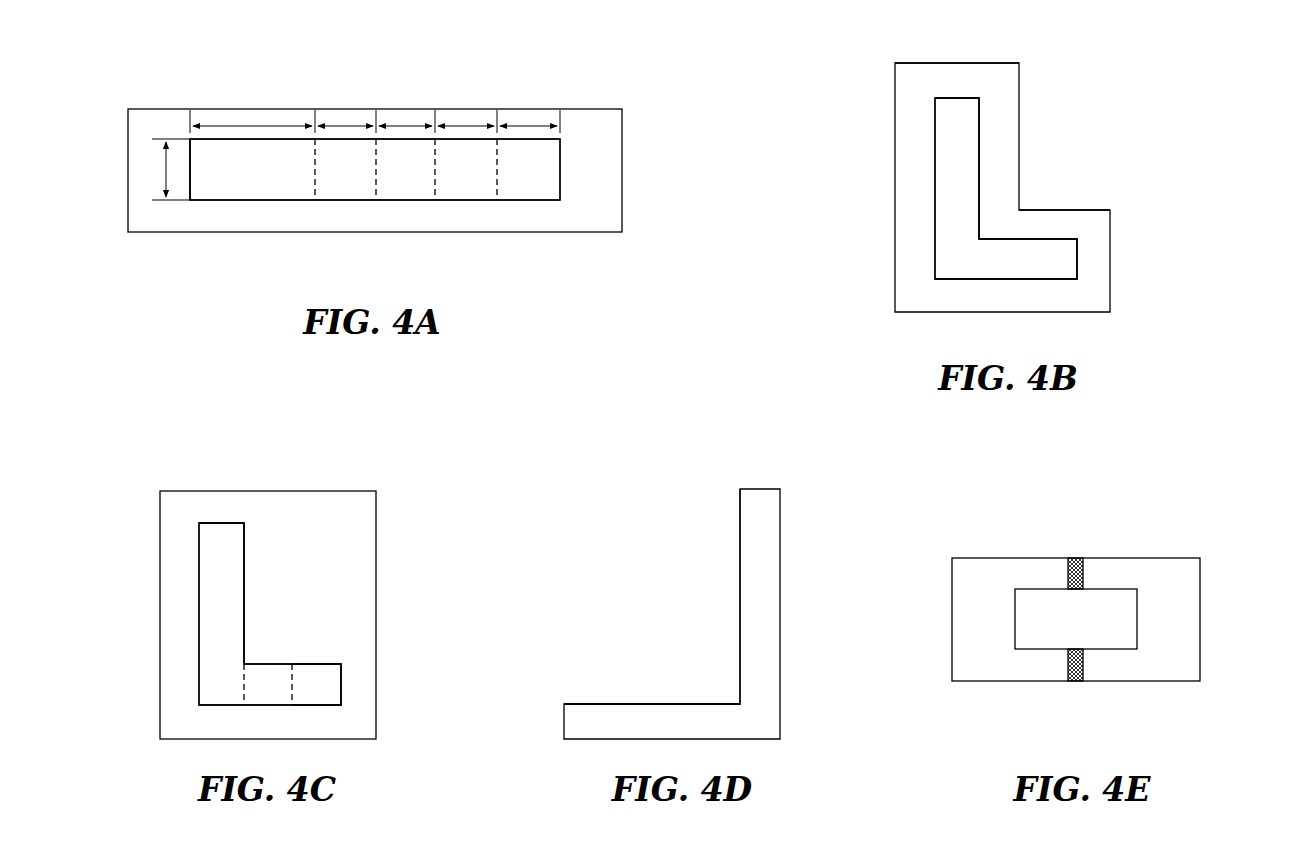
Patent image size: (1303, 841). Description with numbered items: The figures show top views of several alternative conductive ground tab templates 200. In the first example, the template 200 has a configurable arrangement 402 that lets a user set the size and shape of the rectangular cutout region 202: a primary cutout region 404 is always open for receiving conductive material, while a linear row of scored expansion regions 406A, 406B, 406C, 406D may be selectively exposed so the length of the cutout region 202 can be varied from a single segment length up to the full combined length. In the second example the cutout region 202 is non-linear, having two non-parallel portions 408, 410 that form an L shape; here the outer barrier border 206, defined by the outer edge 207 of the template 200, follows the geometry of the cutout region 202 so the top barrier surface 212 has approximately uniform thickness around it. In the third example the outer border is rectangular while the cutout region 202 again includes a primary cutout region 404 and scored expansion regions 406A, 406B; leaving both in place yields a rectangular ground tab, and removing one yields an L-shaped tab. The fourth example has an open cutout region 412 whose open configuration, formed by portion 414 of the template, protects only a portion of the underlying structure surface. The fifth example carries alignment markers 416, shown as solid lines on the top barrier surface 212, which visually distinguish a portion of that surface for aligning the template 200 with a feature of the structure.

In FIG. 4A, the conductive ground tab template 200 is at (193, 82).
In FIG. 4B, the conductive ground tab template 200 is at (1110, 77).
In FIG. 4C, the conductive ground tab template 200 is at (178, 462).
In FIG. 4D, the conductive ground tab template 200 is at (681, 514).
In FIG. 4E, the conductive ground tab template 200 is at (1180, 515).
In FIG. 4A, the cutout region 202 is at (232, 200).
In FIG. 4B, the cutout region 202 is at (955, 136).
In FIG. 4C, the cutout region 202 is at (217, 567).
In FIG. 4E, the cutout region 202 is at (1023, 620).
In FIG. 4B, the outer barrier border 206 is at (960, 57).
In FIG. 4B, the outer edge 207 is at (1052, 209).
In FIG. 4A, the top barrier surface 212 is at (595, 213).
In FIG. 4B, the top barrier surface 212 is at (1003, 152).
In FIG. 4C, the top barrier surface 212 is at (332, 552).
In FIG. 4D, the top barrier surface 212 is at (757, 557).
In FIG. 4E, the top barrier surface 212 is at (1162, 655).
In FIG. 4A, the configurable arrangement 402 is at (572, 177).
In FIG. 4B, the configurable arrangement 402 is at (1092, 262).
In FIG. 4C, the configurable arrangement 402 is at (356, 690).
In FIG. 4A, the primary cutout region 404 is at (228, 169).
In FIG. 4C, the primary cutout region 404 is at (221, 614).
In FIG. 4A, the scored expansion region 406A is at (340, 169).
In FIG. 4C, the scored expansion region 406A is at (270, 684).
In FIG. 4A, the scored expansion region 406B is at (400, 169).
In FIG. 4C, the scored expansion region 406B is at (316, 684).
In FIG. 4A, the scored expansion region 406C is at (460, 169).
In FIG. 4A, the scored expansion region 406D is at (522, 169).
In FIG. 4B, the non-parallel portion 408 is at (957, 168).
In FIG. 4B, the non-parallel portion 410 is at (1006, 259).
In FIG. 4D, the open cutout region 412 is at (662, 671).
In FIG. 4D, the horizontal arm of L-shaped substrate 414 is at (639, 700).
In FIG. 4E, the alignment markers 416 is at (1068, 570).